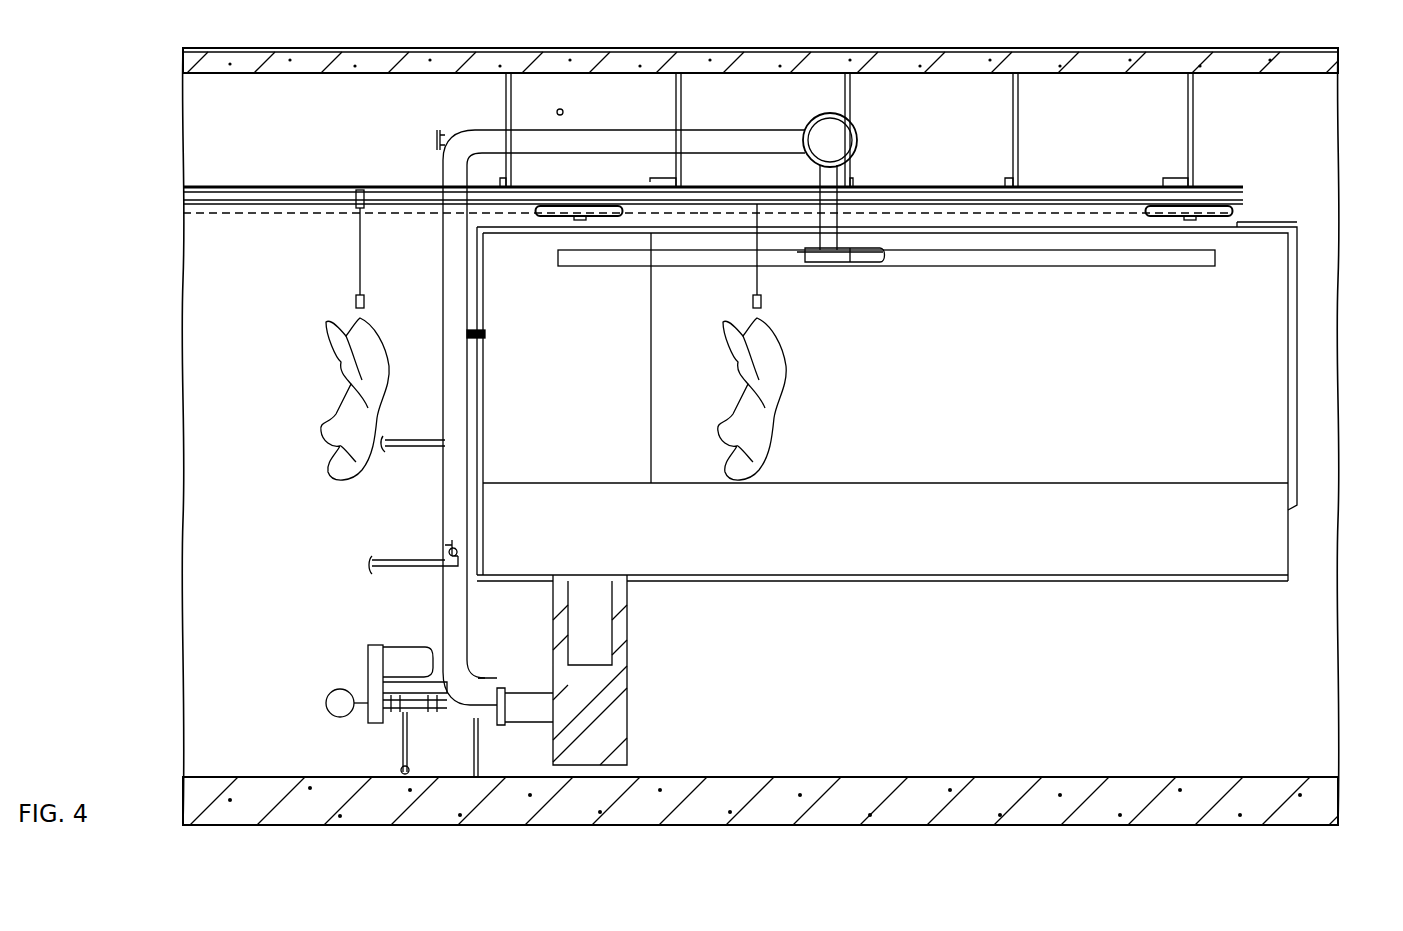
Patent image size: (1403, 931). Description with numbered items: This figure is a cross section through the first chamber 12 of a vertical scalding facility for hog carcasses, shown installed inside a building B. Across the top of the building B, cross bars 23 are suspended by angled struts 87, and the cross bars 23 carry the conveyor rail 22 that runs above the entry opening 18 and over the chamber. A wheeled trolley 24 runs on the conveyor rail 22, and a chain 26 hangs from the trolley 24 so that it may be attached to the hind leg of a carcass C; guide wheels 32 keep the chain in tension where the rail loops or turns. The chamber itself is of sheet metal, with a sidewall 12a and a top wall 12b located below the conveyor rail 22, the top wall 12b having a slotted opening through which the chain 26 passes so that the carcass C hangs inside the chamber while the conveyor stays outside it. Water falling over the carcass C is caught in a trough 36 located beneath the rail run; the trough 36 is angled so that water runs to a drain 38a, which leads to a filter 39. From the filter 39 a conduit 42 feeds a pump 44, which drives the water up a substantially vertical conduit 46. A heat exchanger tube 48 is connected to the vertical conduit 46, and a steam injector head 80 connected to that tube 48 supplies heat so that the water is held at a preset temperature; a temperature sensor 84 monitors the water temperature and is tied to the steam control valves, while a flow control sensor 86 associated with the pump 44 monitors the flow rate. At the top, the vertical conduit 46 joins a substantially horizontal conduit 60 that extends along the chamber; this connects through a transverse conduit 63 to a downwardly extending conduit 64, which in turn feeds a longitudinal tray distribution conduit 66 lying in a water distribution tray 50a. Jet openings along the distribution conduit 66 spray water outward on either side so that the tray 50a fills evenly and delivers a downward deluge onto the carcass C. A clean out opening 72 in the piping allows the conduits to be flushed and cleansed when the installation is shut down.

The building B is at (210, 60).
The hog carcass C is at (770, 408).
The first chamber 12 is at (1300, 196).
The sidewall 12a is at (1058, 414).
The top wall 12b is at (1258, 222).
The entry opening 18 is at (468, 334).
The conveyor rail 22 is at (283, 188).
The cross bar 23 is at (983, 184).
The trolley 24 is at (356, 192).
The chain 26 is at (356, 266).
The guide wheel 32 is at (558, 222).
The water collector trough 36 is at (950, 565).
The drain 38a is at (885, 509).
The filter 39 is at (628, 618).
The conduit 42 is at (524, 696).
The pump 44 is at (370, 658).
The vertical conduit 46 is at (445, 493).
The heat exchanger tube 48 is at (388, 560).
The water distribution tray 50a is at (1110, 256).
The horizontal conduit 60 is at (642, 138).
The transverse conduit 63 is at (855, 132).
The downwardly extending conduit 64 is at (842, 176).
The tray distribution conduit 66 is at (900, 248).
The clean out opening 72 is at (436, 138).
The steam injector head 80 is at (450, 548).
The temperature sensor 84 is at (420, 440).
The flow control sensor 86 is at (326, 706).
The angled strut 87 is at (848, 98).